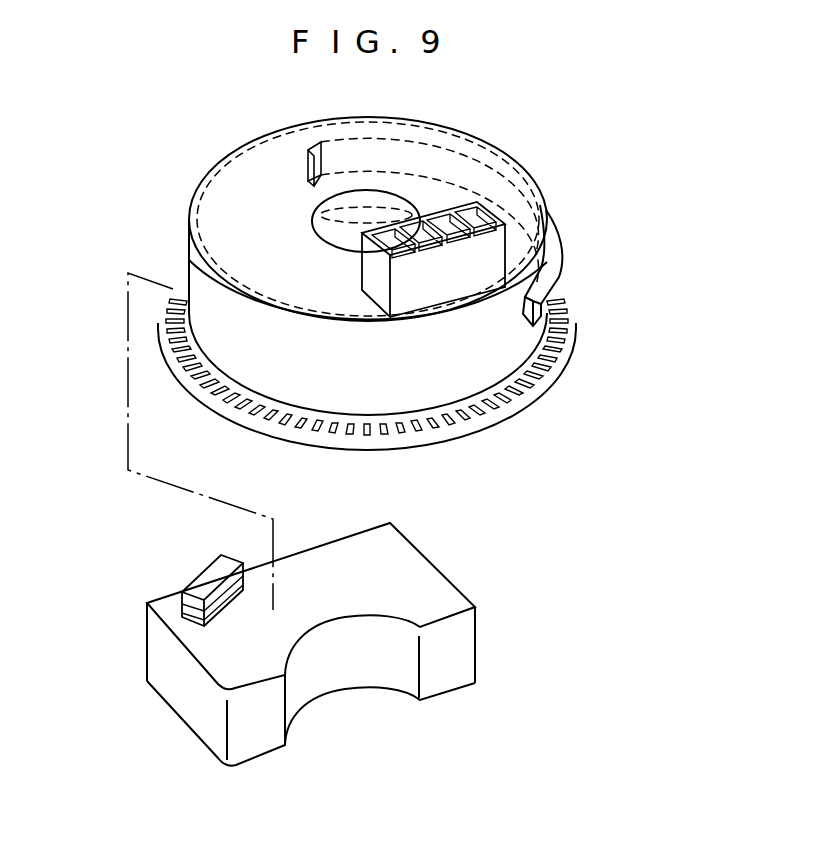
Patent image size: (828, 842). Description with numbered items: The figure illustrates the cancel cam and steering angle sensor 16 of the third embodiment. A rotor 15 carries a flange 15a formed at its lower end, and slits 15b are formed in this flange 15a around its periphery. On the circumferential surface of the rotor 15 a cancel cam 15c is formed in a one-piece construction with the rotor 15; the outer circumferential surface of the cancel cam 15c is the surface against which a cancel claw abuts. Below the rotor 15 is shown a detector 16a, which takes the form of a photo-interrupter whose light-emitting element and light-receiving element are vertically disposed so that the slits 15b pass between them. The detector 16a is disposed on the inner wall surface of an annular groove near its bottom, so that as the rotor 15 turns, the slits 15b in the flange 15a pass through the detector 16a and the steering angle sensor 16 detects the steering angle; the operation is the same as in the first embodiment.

The rotor 15 is at (537, 164).
The flange 15a is at (565, 337).
The slits 15b is at (527, 402).
The cancel cam 15c is at (550, 246).
The steering angle sensor 16 is at (494, 645).
The detector 16a is at (190, 580).